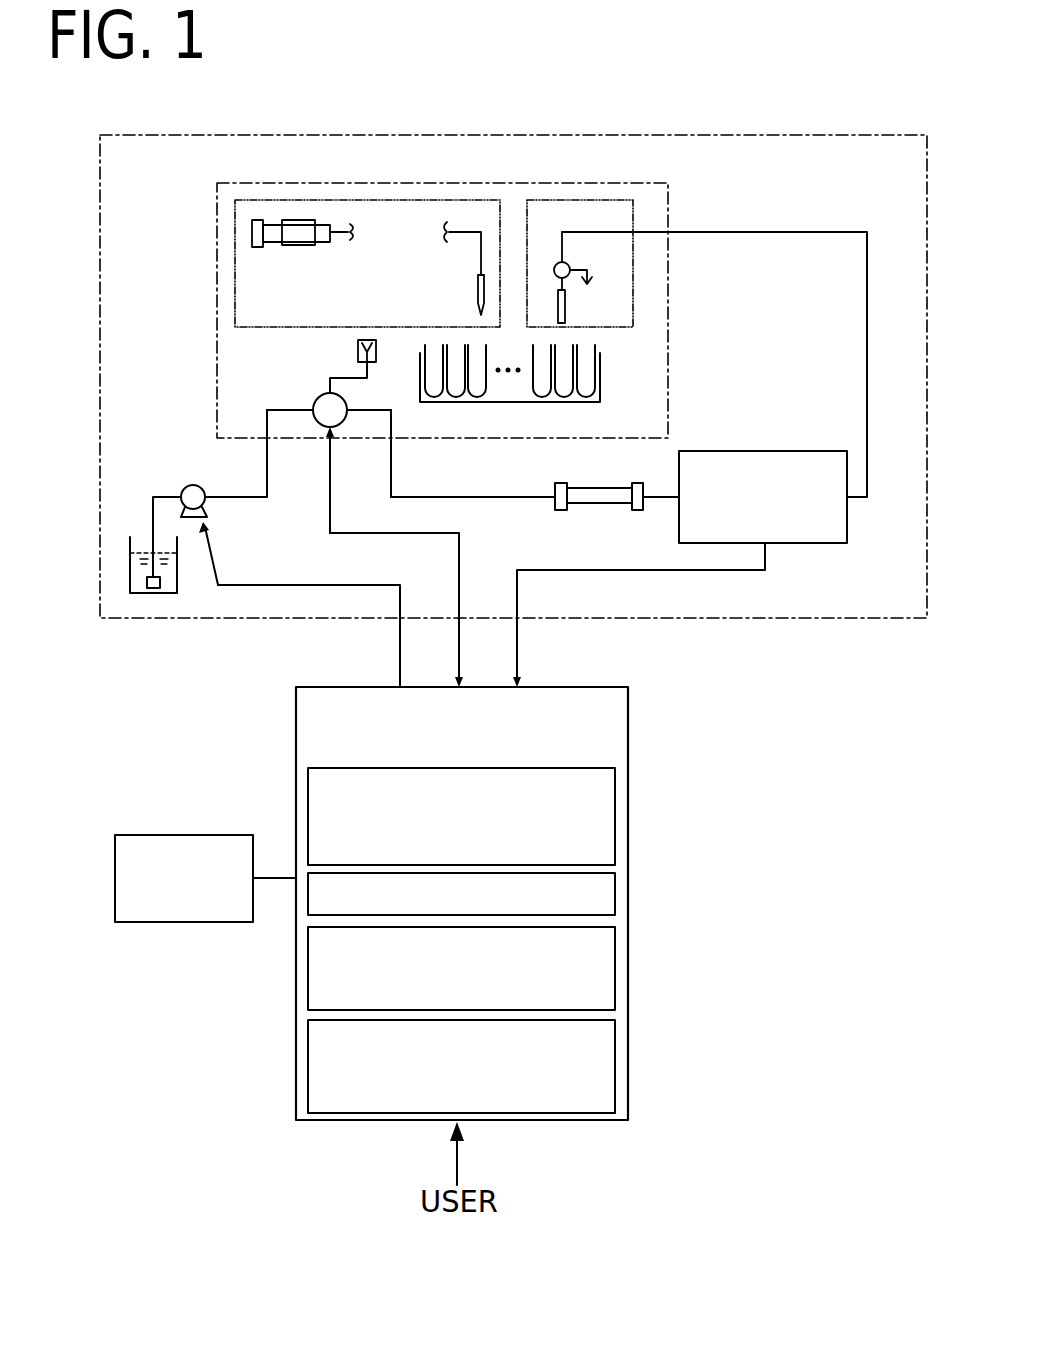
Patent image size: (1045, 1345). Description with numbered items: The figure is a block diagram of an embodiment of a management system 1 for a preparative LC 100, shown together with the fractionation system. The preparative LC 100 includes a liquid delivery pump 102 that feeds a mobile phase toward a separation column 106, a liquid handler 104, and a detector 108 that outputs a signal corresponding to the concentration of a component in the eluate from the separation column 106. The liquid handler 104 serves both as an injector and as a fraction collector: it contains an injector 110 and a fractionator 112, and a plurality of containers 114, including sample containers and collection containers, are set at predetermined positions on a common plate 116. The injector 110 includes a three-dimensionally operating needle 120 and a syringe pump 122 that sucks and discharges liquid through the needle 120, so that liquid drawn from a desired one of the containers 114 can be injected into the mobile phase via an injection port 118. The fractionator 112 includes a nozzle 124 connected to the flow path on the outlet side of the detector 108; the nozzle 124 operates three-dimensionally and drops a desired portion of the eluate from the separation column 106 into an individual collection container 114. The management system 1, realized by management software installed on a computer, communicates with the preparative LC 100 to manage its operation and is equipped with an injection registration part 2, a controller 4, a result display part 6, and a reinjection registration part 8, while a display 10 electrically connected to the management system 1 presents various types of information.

The management system 1 is at (630, 705).
The injection registration part 2 is at (615, 805).
The controller 4 is at (615, 890).
The result display part 6 is at (615, 955).
The reinjection registration part 8 is at (615, 1047).
The display 10 is at (153, 833).
The preparative LC 100 is at (748, 135).
The liquid delivery pump 102 is at (190, 487).
The liquid handler 104 is at (215, 255).
The separation column 106 is at (600, 500).
The detector 108 is at (775, 449).
The injector 110 is at (452, 200).
The fractionator 112 is at (583, 200).
The containers 114 is at (585, 367).
The plate 116 is at (600, 393).
The injection port 118 is at (357, 348).
The needle 120 is at (478, 290).
The syringe pump 122 is at (313, 247).
The nozzle 124 is at (565, 307).